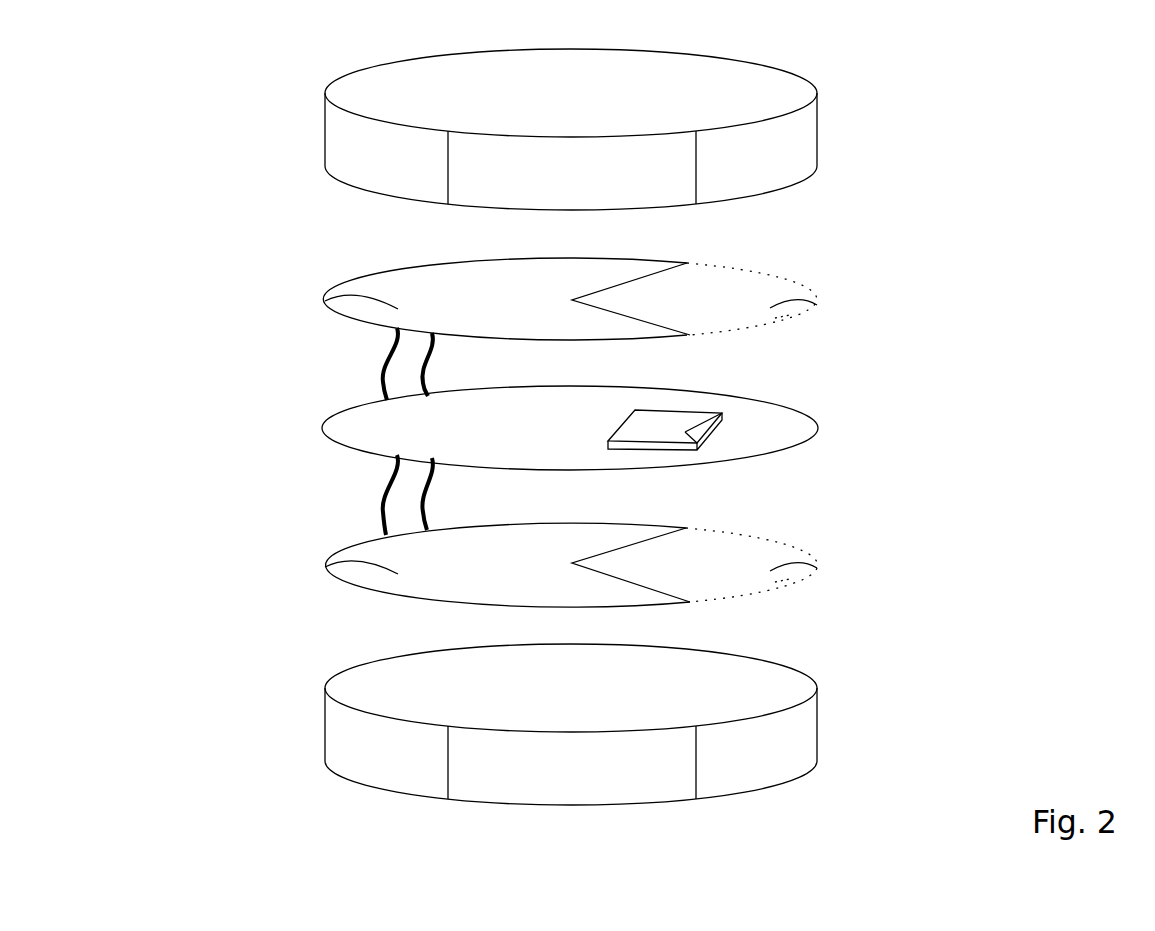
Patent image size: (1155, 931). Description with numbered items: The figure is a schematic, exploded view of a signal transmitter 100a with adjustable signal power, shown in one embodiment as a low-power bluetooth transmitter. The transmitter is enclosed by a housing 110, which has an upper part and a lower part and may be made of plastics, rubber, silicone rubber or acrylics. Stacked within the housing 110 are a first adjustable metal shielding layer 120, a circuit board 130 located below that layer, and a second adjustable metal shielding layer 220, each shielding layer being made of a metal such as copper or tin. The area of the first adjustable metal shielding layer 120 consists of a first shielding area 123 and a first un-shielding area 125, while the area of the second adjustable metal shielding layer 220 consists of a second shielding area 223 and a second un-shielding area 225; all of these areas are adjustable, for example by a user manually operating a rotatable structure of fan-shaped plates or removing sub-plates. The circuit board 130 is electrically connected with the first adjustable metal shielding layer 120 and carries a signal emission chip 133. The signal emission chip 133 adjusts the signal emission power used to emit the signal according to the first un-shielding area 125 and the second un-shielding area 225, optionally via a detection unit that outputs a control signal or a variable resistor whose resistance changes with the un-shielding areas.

The signal transmitter 100a is at (913, 67).
The housing 110 is at (325, 128).
The first adjustable metal shielding layer 120 is at (373, 273).
The first shielding area 123 is at (325, 301).
The first un-shielding area 125 is at (817, 305).
The circuit board 130 is at (325, 432).
The signal emission chip 133 is at (717, 420).
The second adjustable metal shielding layer 220 is at (373, 538).
The second shielding area 223 is at (325, 567).
The second un-shielding area 225 is at (817, 568).